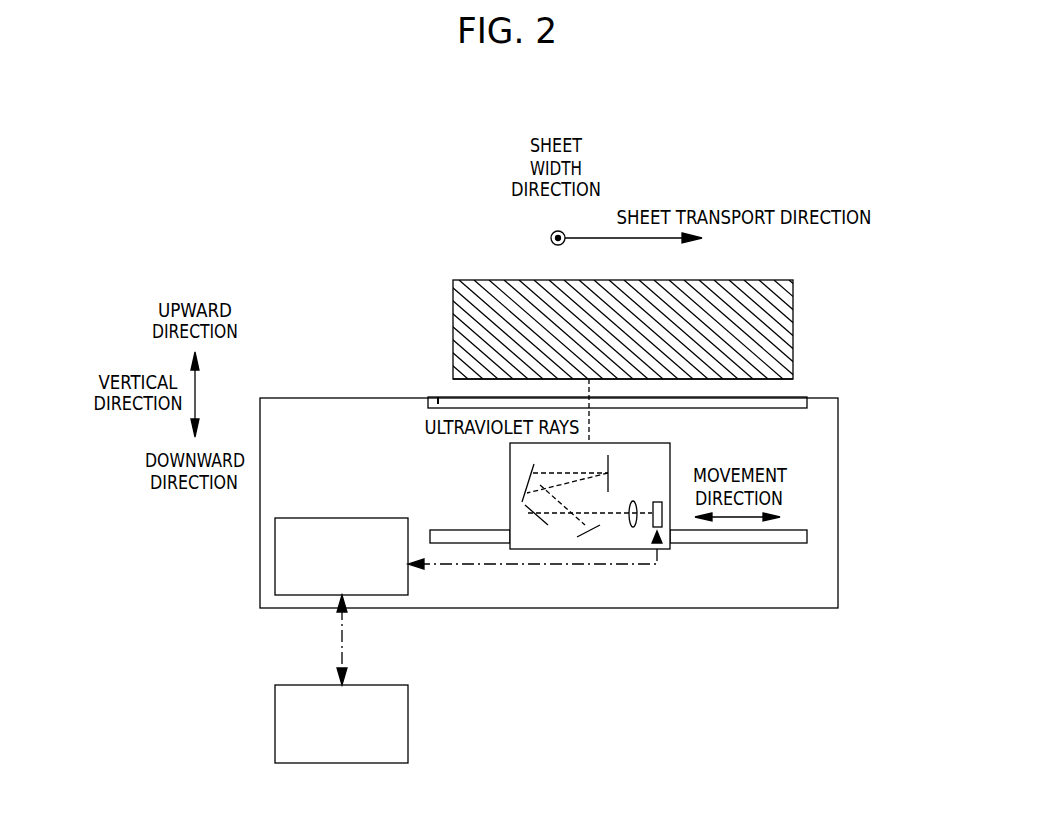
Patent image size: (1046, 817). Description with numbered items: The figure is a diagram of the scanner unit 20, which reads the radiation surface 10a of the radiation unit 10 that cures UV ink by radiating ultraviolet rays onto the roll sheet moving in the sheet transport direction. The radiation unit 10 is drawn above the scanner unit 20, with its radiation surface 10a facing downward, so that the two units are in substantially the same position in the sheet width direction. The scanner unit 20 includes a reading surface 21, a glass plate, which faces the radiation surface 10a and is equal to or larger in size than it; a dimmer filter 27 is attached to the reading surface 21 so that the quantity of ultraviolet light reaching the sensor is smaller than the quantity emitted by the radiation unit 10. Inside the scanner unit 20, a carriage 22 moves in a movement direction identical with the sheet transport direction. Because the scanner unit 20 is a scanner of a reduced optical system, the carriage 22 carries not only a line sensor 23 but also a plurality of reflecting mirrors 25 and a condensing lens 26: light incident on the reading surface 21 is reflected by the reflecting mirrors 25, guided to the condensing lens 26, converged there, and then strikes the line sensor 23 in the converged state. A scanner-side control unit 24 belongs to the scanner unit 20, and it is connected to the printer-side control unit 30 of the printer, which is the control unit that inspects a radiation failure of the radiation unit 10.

The radiation unit 10 is at (793, 327).
The radiation surface 10a is at (767, 379).
The scanner unit 20 is at (838, 500).
The reading surface 21 is at (440, 397).
The carriage 22 is at (606, 507).
The line sensor 23 is at (660, 530).
The scanner-side control unit 24 is at (357, 518).
The reflecting mirrors 25 is at (533, 480).
The condensing lens 26 is at (633, 527).
The dimmer filter 27 is at (438, 400).
The printer-side control unit 30 is at (408, 725).